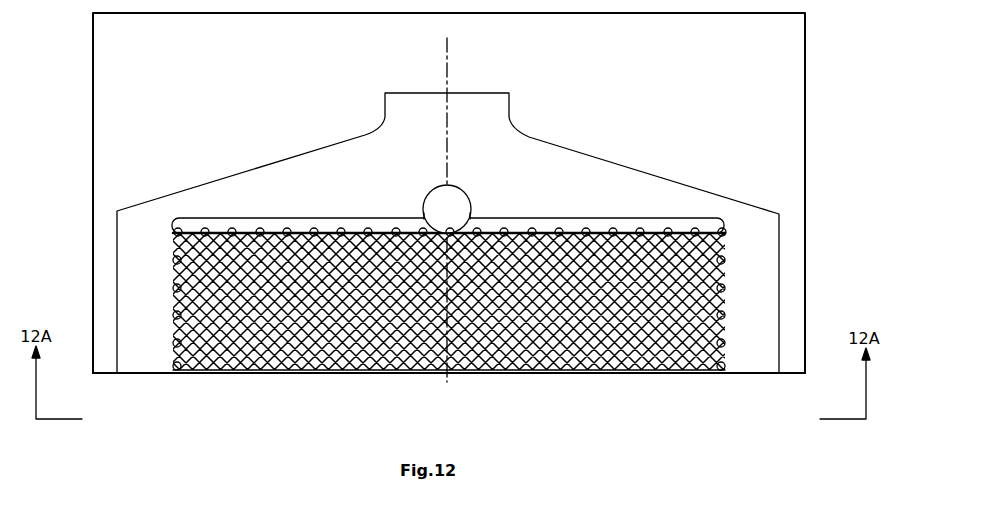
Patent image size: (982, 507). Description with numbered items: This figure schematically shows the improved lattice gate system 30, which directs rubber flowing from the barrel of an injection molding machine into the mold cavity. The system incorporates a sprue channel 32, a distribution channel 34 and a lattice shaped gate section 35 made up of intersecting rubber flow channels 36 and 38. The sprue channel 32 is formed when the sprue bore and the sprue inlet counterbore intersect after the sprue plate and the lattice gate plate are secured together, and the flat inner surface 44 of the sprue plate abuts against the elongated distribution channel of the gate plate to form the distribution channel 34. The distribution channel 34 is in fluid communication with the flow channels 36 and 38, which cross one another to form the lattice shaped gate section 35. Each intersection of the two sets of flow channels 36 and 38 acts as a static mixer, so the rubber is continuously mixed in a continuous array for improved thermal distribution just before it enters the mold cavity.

The lattice gate system 30 is at (643, 388).
The sprue channel 32 is at (457, 203).
The distribution channel 34 is at (567, 226).
The lattice shaped gate section 35 is at (753, 285).
The rubber flow channel 36 is at (287, 371).
The rubber flow channel 38 is at (356, 248).
The flat inner surface of lattice gate sprue plate 44 is at (759, 154).